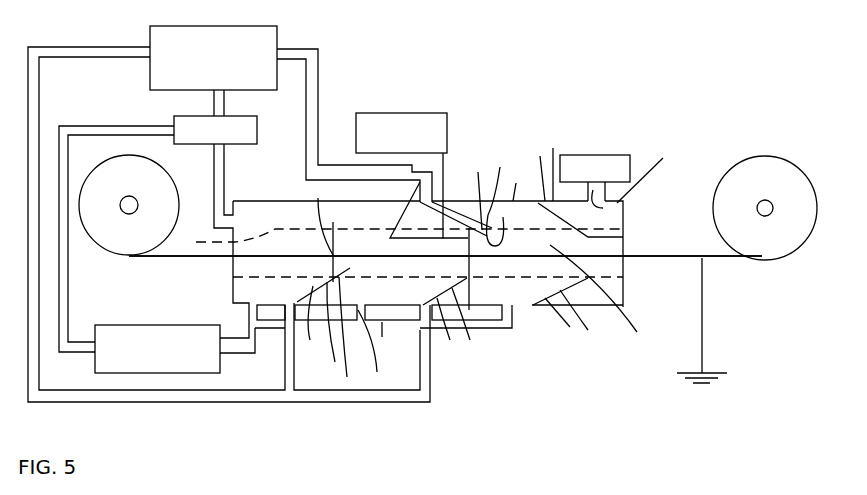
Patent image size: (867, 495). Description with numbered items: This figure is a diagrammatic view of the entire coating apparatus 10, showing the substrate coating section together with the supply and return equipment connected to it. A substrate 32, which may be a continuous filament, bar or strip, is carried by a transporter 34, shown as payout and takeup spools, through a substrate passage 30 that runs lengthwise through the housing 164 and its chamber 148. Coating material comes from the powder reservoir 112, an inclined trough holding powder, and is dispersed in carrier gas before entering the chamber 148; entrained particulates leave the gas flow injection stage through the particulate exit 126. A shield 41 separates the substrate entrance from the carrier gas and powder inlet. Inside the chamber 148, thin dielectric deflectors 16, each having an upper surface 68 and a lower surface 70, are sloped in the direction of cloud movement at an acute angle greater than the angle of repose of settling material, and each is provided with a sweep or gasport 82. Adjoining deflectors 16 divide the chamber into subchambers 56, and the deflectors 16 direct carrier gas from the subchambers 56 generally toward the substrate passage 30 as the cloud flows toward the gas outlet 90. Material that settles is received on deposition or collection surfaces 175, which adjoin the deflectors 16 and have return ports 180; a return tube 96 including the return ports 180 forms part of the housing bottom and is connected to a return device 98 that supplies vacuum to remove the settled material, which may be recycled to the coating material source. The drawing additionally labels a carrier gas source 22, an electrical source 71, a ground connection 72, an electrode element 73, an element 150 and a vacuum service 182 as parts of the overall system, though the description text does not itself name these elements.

The coating apparatus 10 is at (505, 100).
The deflectors 16 is at (465, 260).
The carrier gas source 22 is at (277, 33).
The substrate passage 30 is at (637, 212).
The substrate 32 is at (653, 257).
The transporter 34 is at (180, 185).
The shield 41 is at (450, 217).
The subchambers 56 is at (273, 221).
The upper surface 68 is at (562, 165).
The lower surface 70 is at (460, 332).
The electrical source 71 is at (412, 118).
The ground 72 is at (703, 330).
The electrode 73 is at (414, 168).
The sweep or gasport 82 is at (304, 323).
The gas outlet 90 is at (652, 173).
The return tube 96 is at (377, 341).
The return device 98 is at (163, 375).
The powder reservoir 112 is at (258, 121).
The particulate exit 126 is at (610, 295).
The chamber 148 is at (295, 212).
The inlet passage 150 is at (419, 215).
The housing 164 is at (525, 183).
The deposition or collection surfaces 175 is at (406, 323).
The return ports 180 is at (252, 306).
The vacuum service 182 is at (615, 155).